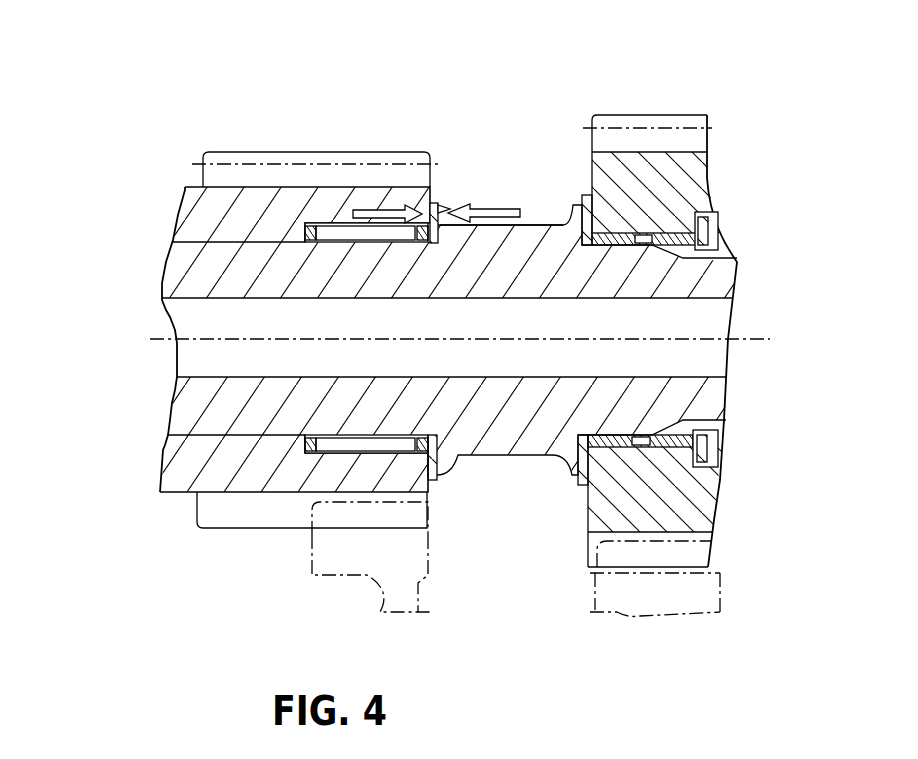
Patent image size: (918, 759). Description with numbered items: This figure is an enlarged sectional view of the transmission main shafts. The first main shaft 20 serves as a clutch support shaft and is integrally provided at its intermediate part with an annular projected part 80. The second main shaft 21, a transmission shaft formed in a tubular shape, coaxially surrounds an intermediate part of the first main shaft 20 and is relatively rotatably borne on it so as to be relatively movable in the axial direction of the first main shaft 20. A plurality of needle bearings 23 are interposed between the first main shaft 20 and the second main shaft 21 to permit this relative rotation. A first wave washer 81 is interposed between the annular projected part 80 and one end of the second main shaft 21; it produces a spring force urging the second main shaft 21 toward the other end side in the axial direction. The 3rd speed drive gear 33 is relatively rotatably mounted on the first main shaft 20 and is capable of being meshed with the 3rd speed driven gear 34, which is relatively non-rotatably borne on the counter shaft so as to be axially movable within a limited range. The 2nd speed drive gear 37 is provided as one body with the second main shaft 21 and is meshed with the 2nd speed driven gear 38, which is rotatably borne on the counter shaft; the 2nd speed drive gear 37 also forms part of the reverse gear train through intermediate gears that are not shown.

The first main shaft 20 is at (187, 405).
The second main shaft 21 is at (175, 217).
The needle bearings 23 is at (356, 242).
The 3rd speed drive gear 33 is at (647, 125).
The 3rd speed driven gear 34 is at (602, 588).
The 2nd speed drive gear 37 is at (345, 160).
The 2nd speed driven gear 38 is at (365, 577).
The annular projected part 80 is at (528, 240).
The first wave washer 81 is at (440, 203).